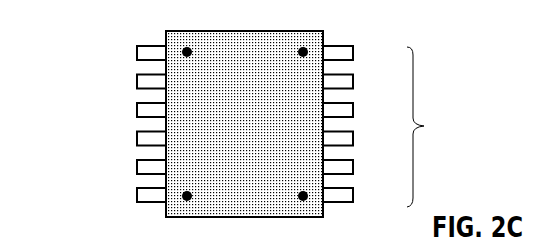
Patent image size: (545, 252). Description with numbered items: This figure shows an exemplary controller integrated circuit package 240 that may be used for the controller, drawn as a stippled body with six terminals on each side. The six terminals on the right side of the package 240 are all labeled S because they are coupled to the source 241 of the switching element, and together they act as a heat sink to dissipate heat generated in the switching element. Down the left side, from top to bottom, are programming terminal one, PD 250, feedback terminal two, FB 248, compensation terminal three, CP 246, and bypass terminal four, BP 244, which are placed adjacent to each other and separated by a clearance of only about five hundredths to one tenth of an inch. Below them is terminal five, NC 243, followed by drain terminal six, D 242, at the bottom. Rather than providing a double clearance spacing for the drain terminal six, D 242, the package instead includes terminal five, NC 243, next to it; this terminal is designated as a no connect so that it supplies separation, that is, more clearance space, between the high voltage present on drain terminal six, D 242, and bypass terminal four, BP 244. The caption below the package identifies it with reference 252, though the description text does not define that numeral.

The package 240 is at (205, 20).
The source 241 is at (446, 108).
The drain terminal 6, D 242 is at (82, 200).
The terminal 5, NC 243 is at (82, 172).
The bypass terminal 4, BP 244 is at (82, 143).
The compensation terminal 3, CP 246 is at (82, 114).
The feedback terminal 2, FB 248 is at (82, 82).
The programming terminal 1, PD 250 is at (82, 59).
The SIP package 252 is at (256, 126).